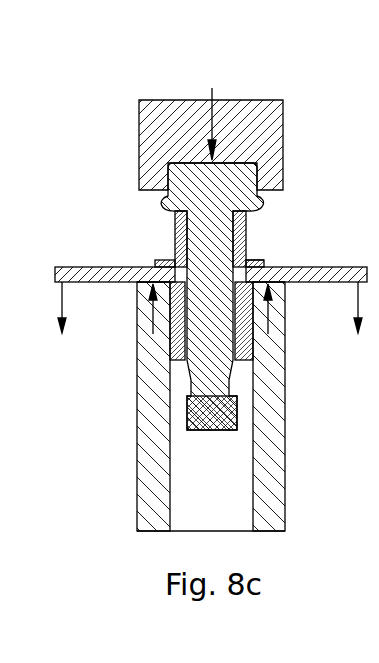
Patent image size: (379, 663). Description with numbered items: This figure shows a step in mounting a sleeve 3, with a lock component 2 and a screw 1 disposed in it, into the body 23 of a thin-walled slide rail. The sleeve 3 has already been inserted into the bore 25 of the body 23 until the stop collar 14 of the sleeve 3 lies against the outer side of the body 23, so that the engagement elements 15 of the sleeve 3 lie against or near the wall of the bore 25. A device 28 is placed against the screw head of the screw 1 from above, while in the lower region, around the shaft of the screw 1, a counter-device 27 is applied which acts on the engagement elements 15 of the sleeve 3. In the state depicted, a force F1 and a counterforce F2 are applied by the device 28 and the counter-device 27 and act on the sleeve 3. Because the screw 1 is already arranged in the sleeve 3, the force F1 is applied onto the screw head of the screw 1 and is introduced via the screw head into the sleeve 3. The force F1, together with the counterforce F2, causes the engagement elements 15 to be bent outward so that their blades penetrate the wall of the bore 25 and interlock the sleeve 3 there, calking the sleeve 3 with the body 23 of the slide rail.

The screw 1 is at (222, 190).
The lock component 2 is at (182, 232).
The sleeve 3 is at (243, 232).
The stop collar 14 is at (250, 263).
The engagement elements 15 is at (140, 287).
The body 23 is at (67, 266).
The bore 25 is at (172, 263).
The counter-device 27 is at (284, 369).
The device 28 is at (158, 109).
The force F1 is at (214, 118).
The counterforce F2 is at (316, 350).